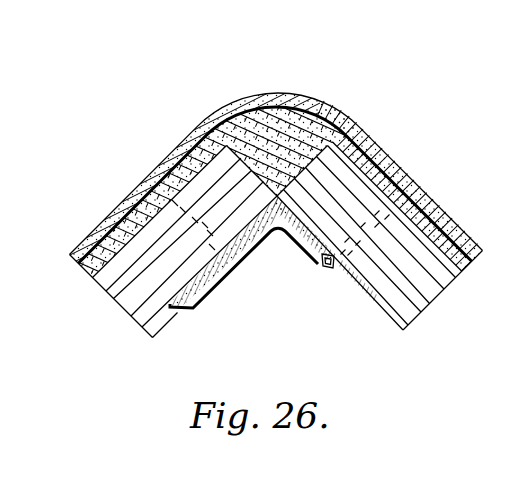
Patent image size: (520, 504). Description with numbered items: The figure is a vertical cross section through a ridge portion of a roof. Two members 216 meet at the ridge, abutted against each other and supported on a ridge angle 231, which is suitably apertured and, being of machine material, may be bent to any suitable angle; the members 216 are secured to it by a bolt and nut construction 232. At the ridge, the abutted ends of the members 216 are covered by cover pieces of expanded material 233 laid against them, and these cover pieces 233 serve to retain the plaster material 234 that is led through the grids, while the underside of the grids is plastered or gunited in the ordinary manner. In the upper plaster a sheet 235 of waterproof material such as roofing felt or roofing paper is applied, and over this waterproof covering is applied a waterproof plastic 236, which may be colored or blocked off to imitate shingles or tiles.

The members 216 is at (407, 238).
The ridge angle 231 is at (305, 249).
The bolt and nut construction 232 is at (328, 268).
The cover pieces of expanded material 233 is at (360, 123).
The plaster material 234 is at (318, 116).
The sheet of waterproof material 235 is at (407, 166).
The waterproof plastic 236 is at (281, 94).